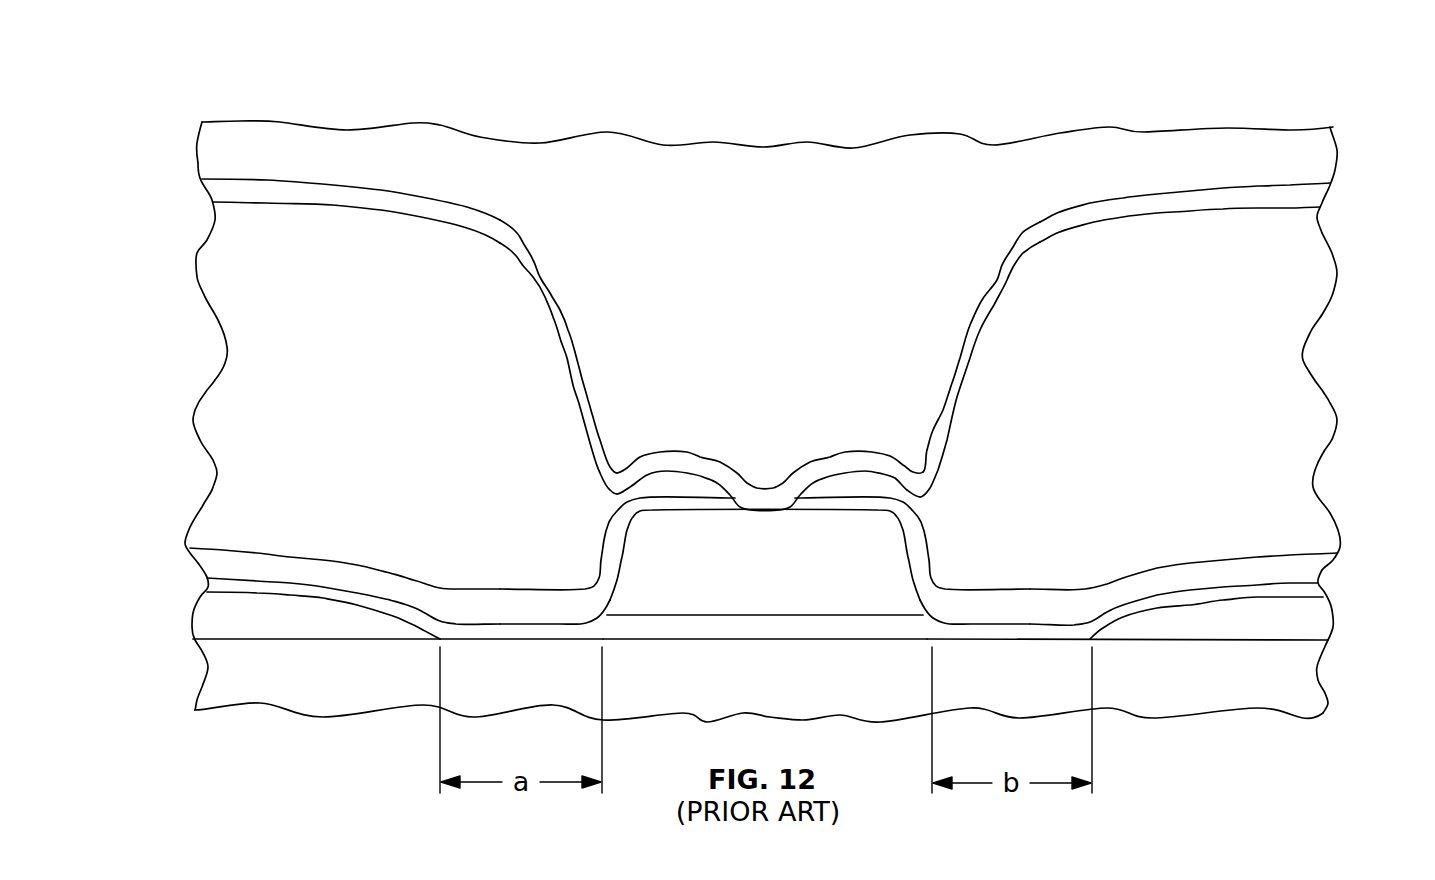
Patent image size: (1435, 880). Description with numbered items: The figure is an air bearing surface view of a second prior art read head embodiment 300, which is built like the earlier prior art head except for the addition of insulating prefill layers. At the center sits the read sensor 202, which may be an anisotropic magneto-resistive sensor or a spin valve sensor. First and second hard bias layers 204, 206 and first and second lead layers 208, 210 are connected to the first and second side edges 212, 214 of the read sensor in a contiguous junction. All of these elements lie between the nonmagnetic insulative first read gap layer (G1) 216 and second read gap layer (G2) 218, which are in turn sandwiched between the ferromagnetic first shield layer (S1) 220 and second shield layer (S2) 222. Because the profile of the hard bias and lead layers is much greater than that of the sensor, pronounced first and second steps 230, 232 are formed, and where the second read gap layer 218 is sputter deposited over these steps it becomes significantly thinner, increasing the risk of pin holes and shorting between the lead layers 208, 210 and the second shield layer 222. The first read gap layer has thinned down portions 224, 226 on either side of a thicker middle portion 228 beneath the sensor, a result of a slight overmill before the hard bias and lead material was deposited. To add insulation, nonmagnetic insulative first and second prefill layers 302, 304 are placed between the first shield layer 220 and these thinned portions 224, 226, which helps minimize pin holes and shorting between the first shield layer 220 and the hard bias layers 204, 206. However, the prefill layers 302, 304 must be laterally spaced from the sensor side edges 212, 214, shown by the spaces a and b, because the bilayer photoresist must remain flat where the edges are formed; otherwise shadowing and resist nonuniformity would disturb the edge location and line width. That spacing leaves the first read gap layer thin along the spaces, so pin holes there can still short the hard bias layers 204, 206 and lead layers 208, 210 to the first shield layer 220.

The prior art read head embodiment 300 is at (557, 103).
The second shield layer 222 is at (1325, 153).
The second shield layer S2 is at (752, 312).
The second read gap layer G2 is at (1170, 205).
The first step 230 is at (540, 263).
The second step 232 is at (995, 263).
The second read gap layer 218 is at (670, 452).
The first lead layer 208 is at (227, 397).
The second lead layer 210 is at (1310, 394).
The first side edge 212 is at (623, 547).
The second side edge 214 is at (913, 552).
The first hard bias layer 204 is at (200, 566).
The second hard bias layer 206 is at (1322, 572).
The first prefill layer 302 is at (200, 618).
The second prefill layer 304 is at (1323, 626).
The thinned portion of first read gap layer 224 is at (316, 596).
The thinned portion of first read gap layer 226 is at (1182, 603).
The first read gap layer G1 is at (1250, 596).
The first shield layer 220 is at (217, 676).
The middle portion of first read gap layer 228 is at (655, 643).
The first shield layer S1 is at (732, 692).
The first read gap layer 216 is at (817, 633).
The read sensor 202 is at (878, 602).